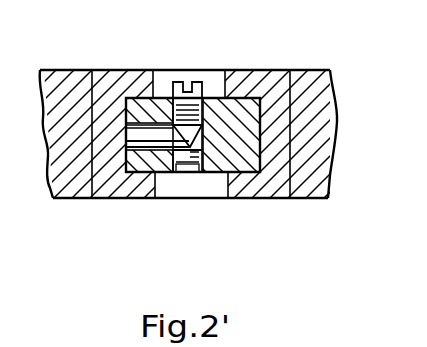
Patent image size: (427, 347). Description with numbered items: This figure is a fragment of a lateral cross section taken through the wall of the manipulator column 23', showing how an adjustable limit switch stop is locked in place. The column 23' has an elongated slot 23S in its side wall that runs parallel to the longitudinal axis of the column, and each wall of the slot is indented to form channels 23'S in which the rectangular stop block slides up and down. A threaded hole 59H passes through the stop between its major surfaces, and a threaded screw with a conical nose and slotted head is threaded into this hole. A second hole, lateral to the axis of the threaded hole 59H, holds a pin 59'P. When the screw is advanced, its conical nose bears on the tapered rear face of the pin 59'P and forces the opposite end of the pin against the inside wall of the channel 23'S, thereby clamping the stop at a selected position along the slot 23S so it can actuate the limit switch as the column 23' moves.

The column 23' is at (213, 120).
The slot 23S is at (210, 77).
The channel 23'S is at (155, 210).
The pin 59'P is at (157, 90).
The threaded hole 59H is at (193, 172).